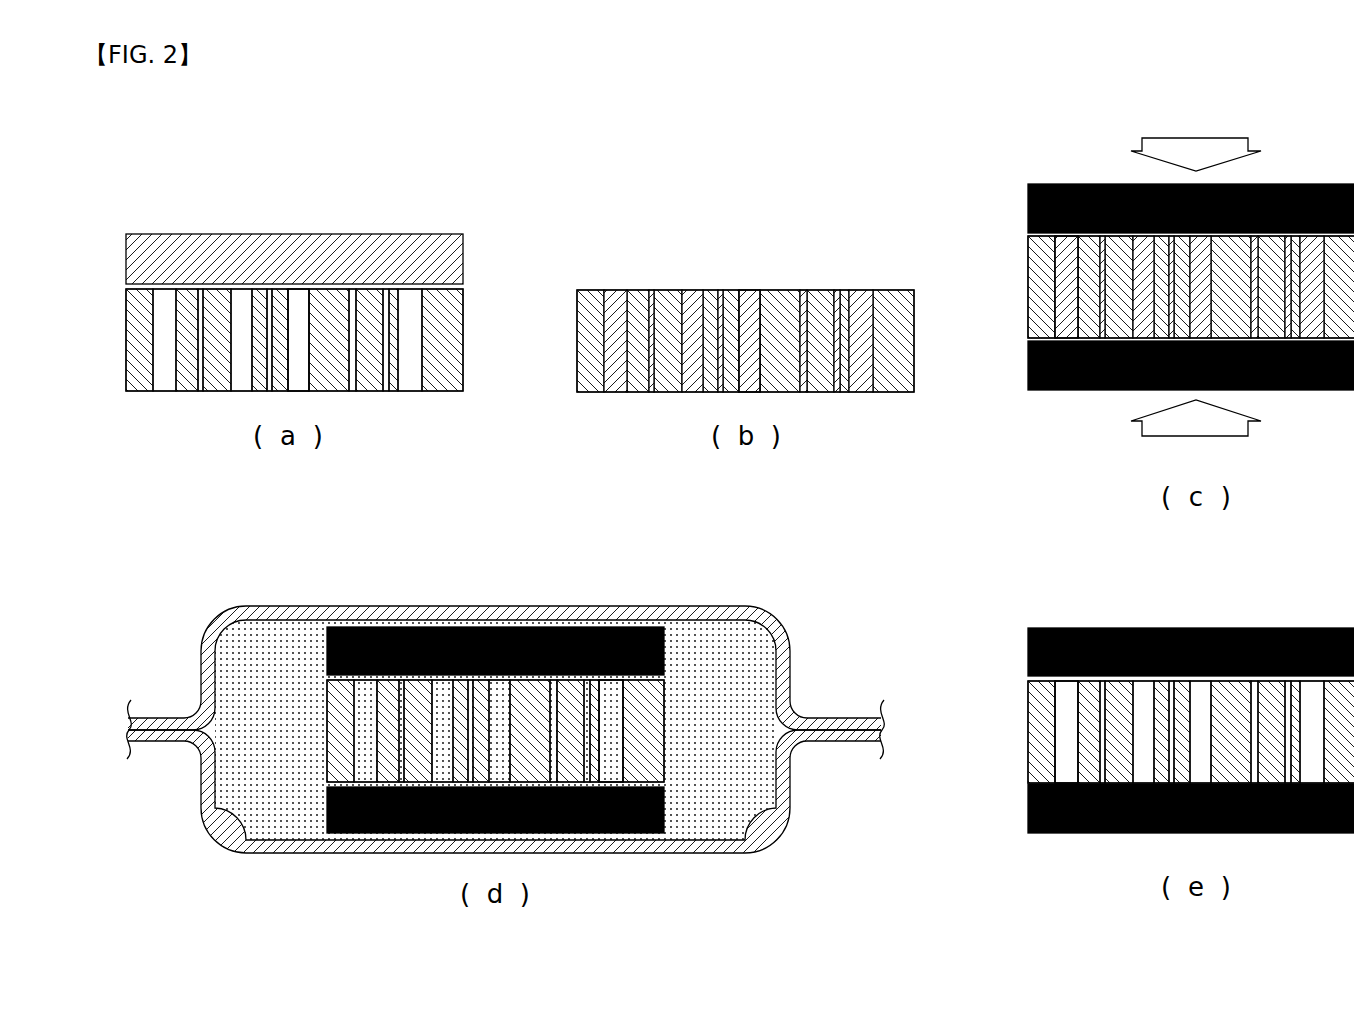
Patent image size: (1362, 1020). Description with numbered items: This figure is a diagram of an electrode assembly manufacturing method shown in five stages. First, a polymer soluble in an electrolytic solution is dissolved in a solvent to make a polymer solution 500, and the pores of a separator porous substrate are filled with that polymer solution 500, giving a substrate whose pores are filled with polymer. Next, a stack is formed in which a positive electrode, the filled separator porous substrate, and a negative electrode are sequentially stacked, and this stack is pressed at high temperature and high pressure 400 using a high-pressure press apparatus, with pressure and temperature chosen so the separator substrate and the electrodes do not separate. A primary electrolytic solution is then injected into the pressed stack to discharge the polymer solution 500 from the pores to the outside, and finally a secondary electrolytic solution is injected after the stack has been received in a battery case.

The high temperature and high pressure 400 is at (1243, 132).
The polymer solution 500 is at (442, 257).